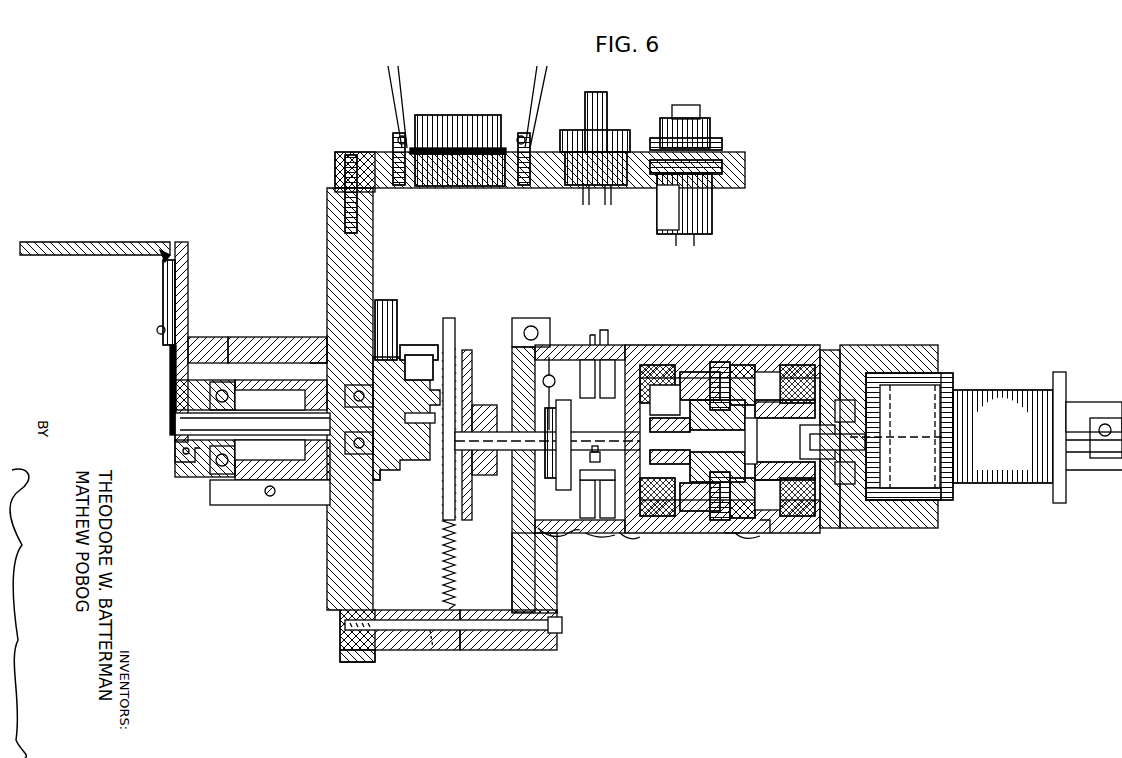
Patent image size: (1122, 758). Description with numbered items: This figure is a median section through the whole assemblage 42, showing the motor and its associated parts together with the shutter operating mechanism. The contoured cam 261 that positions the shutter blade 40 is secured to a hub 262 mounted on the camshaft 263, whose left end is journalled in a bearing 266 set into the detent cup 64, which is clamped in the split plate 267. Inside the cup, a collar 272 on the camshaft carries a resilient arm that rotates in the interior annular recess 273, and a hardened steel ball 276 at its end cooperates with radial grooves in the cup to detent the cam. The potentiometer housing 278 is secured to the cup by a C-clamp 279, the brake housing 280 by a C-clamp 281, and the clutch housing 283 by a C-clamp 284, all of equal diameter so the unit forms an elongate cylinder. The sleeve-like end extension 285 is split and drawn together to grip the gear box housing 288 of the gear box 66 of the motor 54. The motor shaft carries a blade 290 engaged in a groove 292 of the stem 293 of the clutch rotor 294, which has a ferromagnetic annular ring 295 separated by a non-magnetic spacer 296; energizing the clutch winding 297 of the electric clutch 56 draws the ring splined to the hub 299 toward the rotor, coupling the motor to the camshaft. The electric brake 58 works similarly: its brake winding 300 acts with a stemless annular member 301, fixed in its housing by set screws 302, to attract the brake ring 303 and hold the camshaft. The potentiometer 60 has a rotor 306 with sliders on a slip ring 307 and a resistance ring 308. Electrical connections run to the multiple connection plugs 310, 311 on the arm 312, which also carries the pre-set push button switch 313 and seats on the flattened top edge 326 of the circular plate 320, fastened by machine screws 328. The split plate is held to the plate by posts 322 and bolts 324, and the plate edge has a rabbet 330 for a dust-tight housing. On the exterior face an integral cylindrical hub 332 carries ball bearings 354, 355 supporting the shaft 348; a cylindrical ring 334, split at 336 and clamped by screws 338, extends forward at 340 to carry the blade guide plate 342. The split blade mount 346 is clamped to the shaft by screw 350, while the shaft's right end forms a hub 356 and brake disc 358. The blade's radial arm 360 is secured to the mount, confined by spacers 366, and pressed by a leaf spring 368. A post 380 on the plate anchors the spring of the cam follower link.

The shutter blade 40 is at (102, 240).
The assemblage 42 is at (668, 650).
The motor 54 is at (1028, 390).
The electric clutch 56 is at (766, 336).
The electric brake 58 is at (684, 336).
The potentiometer 60 is at (609, 327).
The detent cup 64 is at (501, 368).
The gear box 66 is at (918, 377).
The contoured cam 261 is at (452, 495).
The hub 262 is at (483, 408).
The camshaft 263 is at (482, 468).
The bearing 266 is at (512, 500).
The split plate 267 is at (515, 590).
The collar 272 is at (552, 478).
The interior annular recess 273 is at (566, 345).
The hardened steel ball 276 is at (551, 386).
The potentiometer housing 278 is at (618, 538).
The C-clamp 279 is at (537, 330).
The brake housing 280 is at (726, 532).
The C-clamp 281 is at (626, 345).
The clutch housing 283 is at (767, 536).
The C-clamp 284 is at (735, 536).
The sleeve-like end extension 285 is at (882, 345).
The gear box housing 288 is at (912, 500).
The blade 290 is at (822, 458).
The groove 292 is at (841, 439).
The stem 293 is at (786, 400).
The clutch rotor 294 is at (770, 360).
The ferromagnetic annular ring 295 is at (750, 535).
The spacer 296 is at (750, 345).
The clutch winding 297 is at (748, 358).
The hub 299 is at (692, 525).
The brake winding 300 is at (657, 345).
The annular member 301 is at (690, 345).
The set screws 302 is at (708, 360).
The brake ring 303 is at (712, 525).
The potentiometer rotor 306 is at (597, 486).
The slip ring 307 is at (562, 534).
The resistance ring 308 is at (602, 537).
The multiple connection plug 310 is at (460, 115).
The multiple connection plug 311 is at (620, 130).
The arm 312 is at (745, 165).
The pre-set push button switch 313 is at (710, 127).
The circular plate 320 is at (340, 570).
The spacers or posts 322 is at (497, 648).
The bolts 324 is at (400, 648).
The flattened top edge 326 is at (335, 175).
The machine screws 328 is at (345, 205).
The rabbet 330 is at (345, 662).
The cylindrical hub 332 is at (300, 465).
The cylindrical ring 334 is at (263, 336).
The split 336 is at (235, 495).
The screws 338 is at (266, 497).
The forward extension 340 is at (205, 335).
The blade guide plate 342 is at (188, 270).
The blade mount 346 is at (180, 443).
The shaft 348 is at (258, 426).
The screw 350 is at (188, 468).
The ball bearing 354 is at (232, 382).
The ball bearing 355 is at (326, 344).
The hub 356 is at (418, 462).
The brake disc 358 is at (380, 482).
The radial arm 360 is at (170, 360).
The spacers 366 is at (163, 336).
The leaf spring 368 is at (160, 258).
The post 380 is at (425, 648).